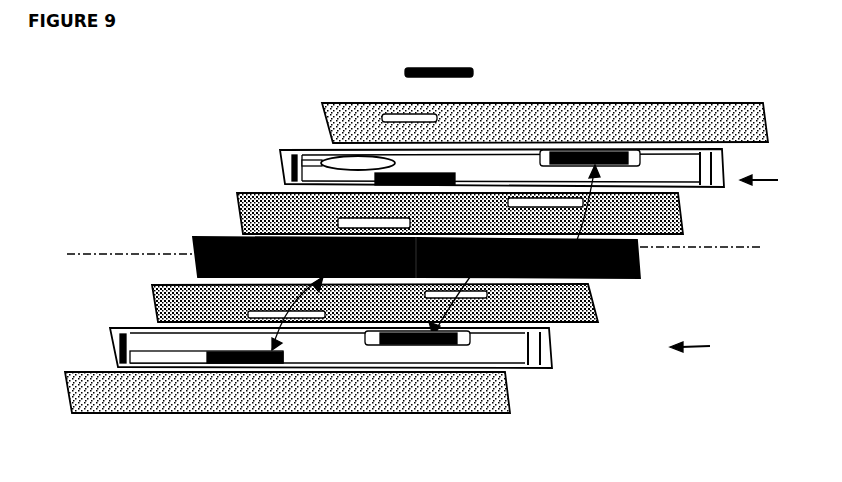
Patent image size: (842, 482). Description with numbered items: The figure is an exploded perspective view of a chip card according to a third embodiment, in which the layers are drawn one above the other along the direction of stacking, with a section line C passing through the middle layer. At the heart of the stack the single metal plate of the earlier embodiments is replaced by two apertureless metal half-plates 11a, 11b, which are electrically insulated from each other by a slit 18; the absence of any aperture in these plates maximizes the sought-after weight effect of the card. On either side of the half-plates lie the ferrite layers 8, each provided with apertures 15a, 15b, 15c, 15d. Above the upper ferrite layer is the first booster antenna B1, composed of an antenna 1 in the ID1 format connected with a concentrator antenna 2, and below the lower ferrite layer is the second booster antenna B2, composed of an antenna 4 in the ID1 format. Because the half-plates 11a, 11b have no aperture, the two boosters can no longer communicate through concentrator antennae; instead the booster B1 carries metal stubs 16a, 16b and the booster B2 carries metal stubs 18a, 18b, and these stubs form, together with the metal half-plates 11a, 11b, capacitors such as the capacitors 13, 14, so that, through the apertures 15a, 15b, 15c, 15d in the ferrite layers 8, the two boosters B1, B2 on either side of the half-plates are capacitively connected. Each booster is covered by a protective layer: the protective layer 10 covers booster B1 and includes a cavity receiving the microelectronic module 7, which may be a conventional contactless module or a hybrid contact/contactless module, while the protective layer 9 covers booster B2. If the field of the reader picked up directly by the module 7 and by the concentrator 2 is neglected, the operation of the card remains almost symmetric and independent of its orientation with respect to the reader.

The antenna 1 is at (281, 158).
The concentrator antenna 2 is at (323, 161).
The antenna 4 is at (115, 347).
The microelectronic module 7 is at (473, 70).
The ferrite layer 8 is at (673, 217).
The protective layer 9 is at (503, 403).
The protective layer 10 is at (748, 120).
The metal half-plate 11a is at (198, 267).
The metal half-plate 11b is at (638, 271).
The capacitor 13 is at (398, 206).
The capacitor 14 is at (588, 207).
The aperture 15a is at (345, 224).
The aperture 15b is at (258, 313).
The aperture 15c is at (547, 202).
The aperture 15d is at (488, 293).
The metal stub 16a is at (447, 176).
The metal stub 16b is at (605, 152).
The slit 18 is at (273, 239).
The metal stub 18a is at (247, 363).
The metal stub 18b is at (416, 346).
The first booster antenna B1 is at (781, 178).
The second booster antenna B2 is at (718, 341).
The section line C is at (418, 238).